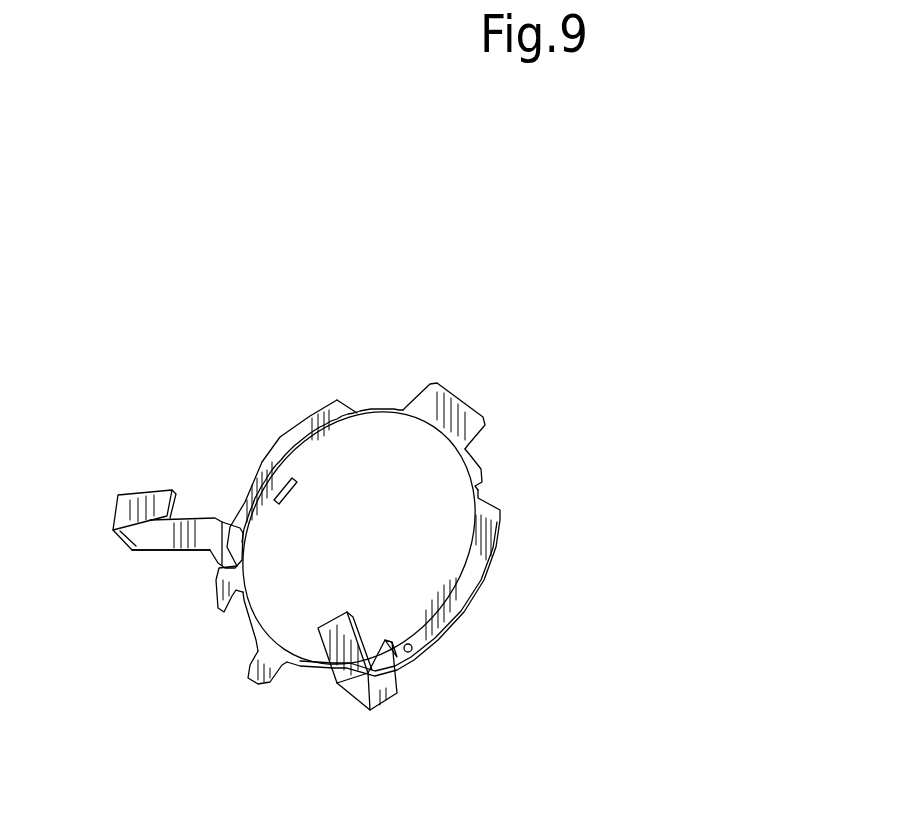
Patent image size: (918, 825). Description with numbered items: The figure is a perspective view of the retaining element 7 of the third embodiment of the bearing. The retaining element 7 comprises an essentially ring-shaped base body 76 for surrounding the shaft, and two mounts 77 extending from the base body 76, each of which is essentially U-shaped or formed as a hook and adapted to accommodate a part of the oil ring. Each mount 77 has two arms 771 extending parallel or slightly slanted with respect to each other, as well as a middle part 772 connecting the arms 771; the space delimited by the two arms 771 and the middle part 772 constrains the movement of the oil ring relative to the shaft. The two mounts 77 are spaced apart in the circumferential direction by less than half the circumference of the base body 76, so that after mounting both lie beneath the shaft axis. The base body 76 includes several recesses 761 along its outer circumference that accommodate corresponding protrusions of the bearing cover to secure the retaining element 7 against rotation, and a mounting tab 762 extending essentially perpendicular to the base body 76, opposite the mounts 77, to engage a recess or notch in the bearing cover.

The retaining element 7 is at (482, 229).
The base body 76 is at (460, 588).
The recesses 761 is at (372, 398).
The mounting tab 762 is at (484, 470).
The mount 77 is at (135, 477).
The arms 771 is at (168, 488).
The middle part 772 is at (123, 543).